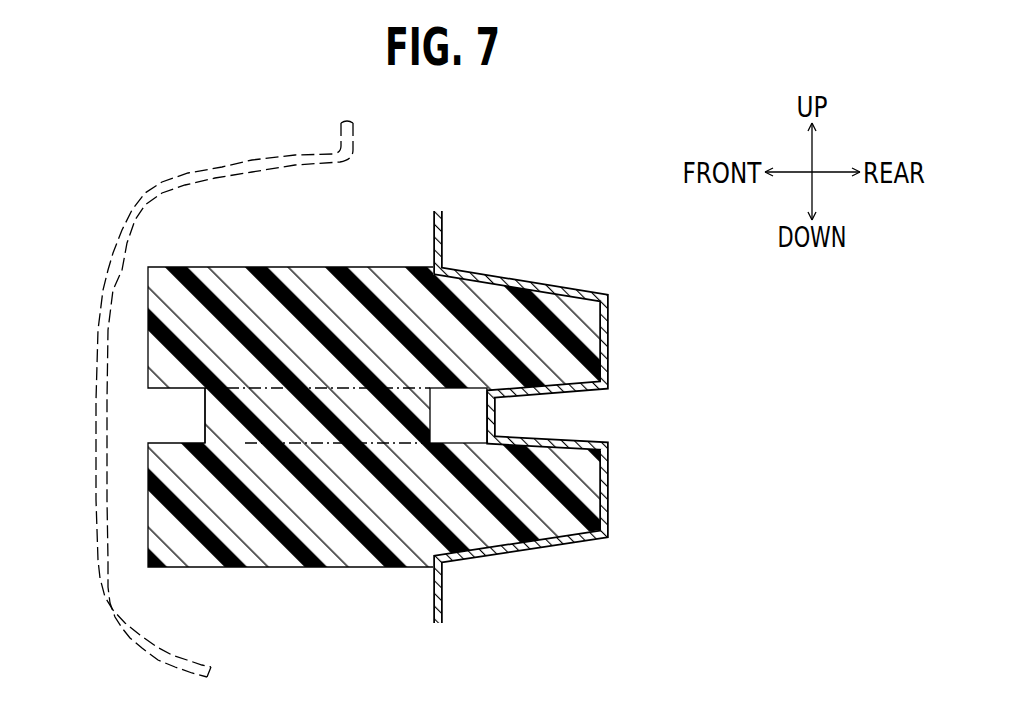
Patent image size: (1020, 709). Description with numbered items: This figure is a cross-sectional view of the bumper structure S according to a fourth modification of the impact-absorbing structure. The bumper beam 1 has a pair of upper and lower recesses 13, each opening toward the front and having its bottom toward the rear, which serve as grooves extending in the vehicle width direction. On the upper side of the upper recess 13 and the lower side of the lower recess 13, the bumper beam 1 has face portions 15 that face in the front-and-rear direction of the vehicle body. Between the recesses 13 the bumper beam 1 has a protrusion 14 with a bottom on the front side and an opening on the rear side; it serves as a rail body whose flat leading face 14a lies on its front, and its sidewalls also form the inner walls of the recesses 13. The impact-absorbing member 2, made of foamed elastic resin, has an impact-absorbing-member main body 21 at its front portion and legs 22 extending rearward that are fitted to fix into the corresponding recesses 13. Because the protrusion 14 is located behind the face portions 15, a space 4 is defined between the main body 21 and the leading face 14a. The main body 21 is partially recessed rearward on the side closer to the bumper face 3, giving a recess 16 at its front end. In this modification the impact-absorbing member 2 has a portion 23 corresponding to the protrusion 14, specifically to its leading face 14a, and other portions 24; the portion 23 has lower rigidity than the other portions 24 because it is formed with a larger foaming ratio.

The bumper beam 1 is at (554, 287).
The impact-absorbing member 2 is at (148, 491).
The bumper face 3 is at (287, 155).
The space 4 is at (410, 416).
The recess 13 is at (543, 383).
The protrusion 14 is at (486, 428).
The leading face 14a is at (486, 414).
The face portion 15 is at (432, 600).
The recess 16 is at (176, 415).
The impact-absorbing-member main body 21 is at (252, 523).
The legs 22 is at (543, 342).
The portion corresponding to the protrusion 23 is at (293, 413).
The other portions 24 is at (330, 320).
The bumper structure S is at (590, 180).